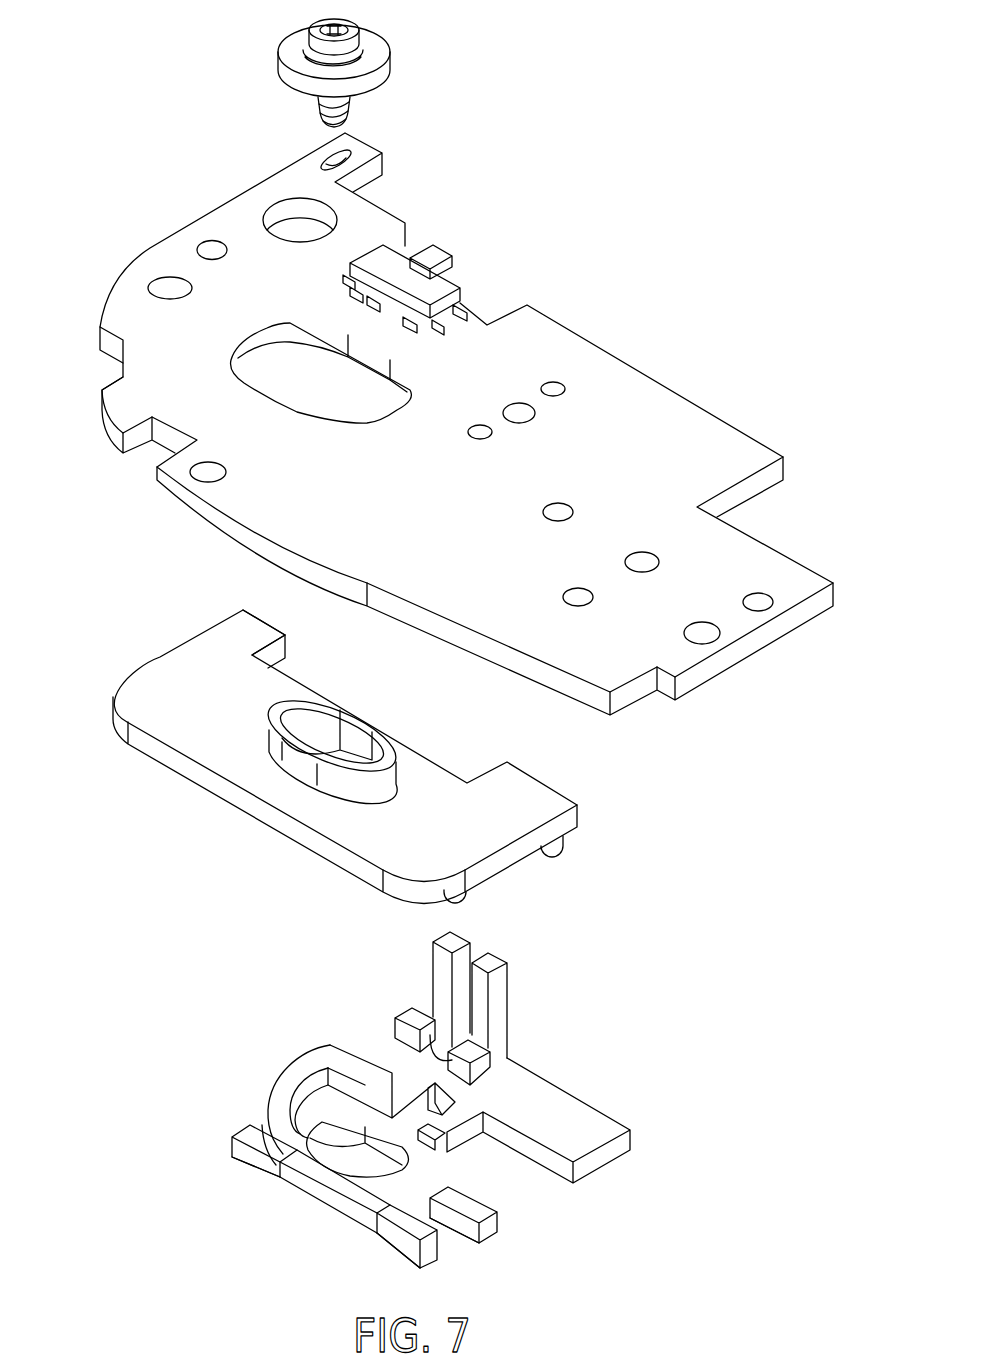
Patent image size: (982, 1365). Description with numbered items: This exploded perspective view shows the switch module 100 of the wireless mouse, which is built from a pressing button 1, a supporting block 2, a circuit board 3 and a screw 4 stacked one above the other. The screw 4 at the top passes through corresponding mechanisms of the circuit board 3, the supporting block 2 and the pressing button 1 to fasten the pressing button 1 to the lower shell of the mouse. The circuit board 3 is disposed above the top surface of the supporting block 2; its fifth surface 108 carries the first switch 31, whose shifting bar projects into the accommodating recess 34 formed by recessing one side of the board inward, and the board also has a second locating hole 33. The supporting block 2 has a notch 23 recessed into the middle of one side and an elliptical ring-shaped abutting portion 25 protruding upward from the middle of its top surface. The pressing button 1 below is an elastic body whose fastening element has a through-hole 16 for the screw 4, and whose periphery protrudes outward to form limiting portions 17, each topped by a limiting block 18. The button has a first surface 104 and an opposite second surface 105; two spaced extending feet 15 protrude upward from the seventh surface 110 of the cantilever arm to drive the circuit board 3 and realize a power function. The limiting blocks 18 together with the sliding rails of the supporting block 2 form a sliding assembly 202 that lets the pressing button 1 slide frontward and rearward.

The switch module 100 is at (30, 32).
The screw 4 is at (405, 60).
The circuit board 3 is at (464, 424).
The fifth surface 108 is at (587, 370).
The second locating hole 33 is at (272, 368).
The first switch 31 is at (432, 254).
The accommodating recess 34 is at (487, 305).
The supporting block 2 is at (425, 733).
The notch 23 is at (293, 670).
The abutting portion 25 is at (293, 763).
The second surface 105 is at (377, 835).
The pressing button 1 is at (458, 1112).
The seventh surface 110 is at (523, 1097).
The extending foot 15 is at (495, 998).
The first surface 104 is at (317, 1057).
The sliding assembly 202 is at (263, 1105).
The through-hole 16 is at (352, 1150).
The limiting portion 17 is at (250, 1158).
The limiting block 18 is at (250, 1133).